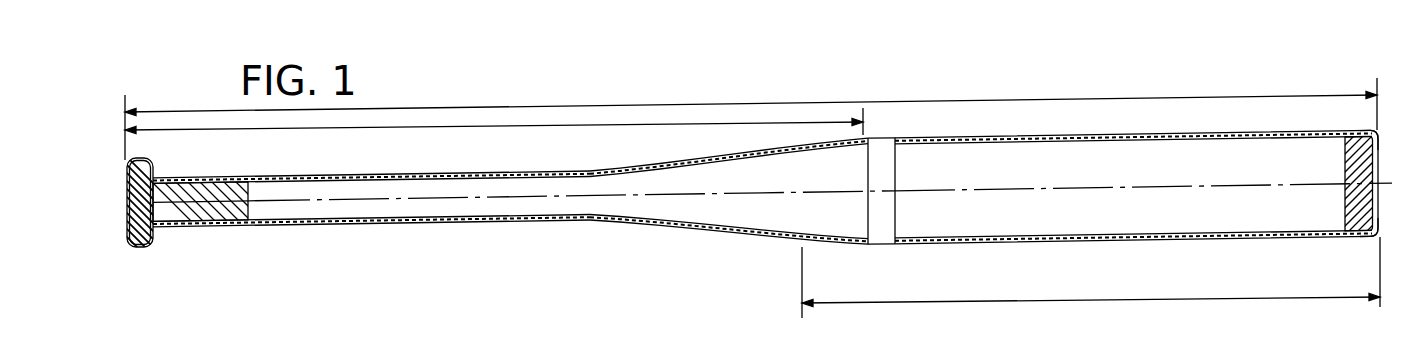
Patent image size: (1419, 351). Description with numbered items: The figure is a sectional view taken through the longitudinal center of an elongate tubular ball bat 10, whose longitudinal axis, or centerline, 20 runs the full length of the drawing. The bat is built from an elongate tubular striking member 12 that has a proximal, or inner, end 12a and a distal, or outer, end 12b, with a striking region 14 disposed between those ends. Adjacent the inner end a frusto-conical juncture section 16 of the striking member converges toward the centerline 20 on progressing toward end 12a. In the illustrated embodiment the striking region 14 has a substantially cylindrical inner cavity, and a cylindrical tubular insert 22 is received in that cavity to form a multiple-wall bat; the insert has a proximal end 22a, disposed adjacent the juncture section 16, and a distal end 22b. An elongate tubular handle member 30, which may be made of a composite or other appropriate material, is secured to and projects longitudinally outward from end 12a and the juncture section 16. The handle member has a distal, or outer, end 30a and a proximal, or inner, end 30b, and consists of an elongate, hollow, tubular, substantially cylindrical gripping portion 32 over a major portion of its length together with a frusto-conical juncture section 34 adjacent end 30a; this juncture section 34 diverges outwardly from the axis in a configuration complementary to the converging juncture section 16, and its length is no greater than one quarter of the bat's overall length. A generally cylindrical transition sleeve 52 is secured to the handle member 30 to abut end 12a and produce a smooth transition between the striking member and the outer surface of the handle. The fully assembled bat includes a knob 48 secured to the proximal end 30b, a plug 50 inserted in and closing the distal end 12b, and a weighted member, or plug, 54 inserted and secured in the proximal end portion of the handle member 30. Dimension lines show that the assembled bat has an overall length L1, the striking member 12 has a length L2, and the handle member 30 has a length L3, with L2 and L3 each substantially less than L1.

The ball bat 10 is at (1136, 198).
The striking member 12 is at (1268, 131).
The proximal end of striking member 12a is at (800, 243).
The distal end of striking member 12b is at (1378, 132).
The striking region 14 is at (1072, 135).
The juncture section of striking member 16 is at (840, 243).
The longitudinal axis 20 is at (1243, 183).
The tubular insert 22 is at (1175, 237).
The proximal end of insert 22a is at (895, 213).
The distal end of insert 22b is at (1347, 237).
The handle member 30 is at (530, 221).
The distal end of handle member 30a is at (870, 168).
The proximal end of handle member 30b is at (149, 162).
The gripping portion 32 is at (405, 222).
The juncture section of handle member 34 is at (826, 230).
The knob 48 is at (147, 247).
The plug 50 is at (1347, 169).
The transition sleeve 52 is at (786, 152).
The weighted member 54 is at (203, 222).
The overall length L1 is at (962, 100).
The length of striking member L2 is at (1060, 300).
The length of handle member L3 is at (412, 130).